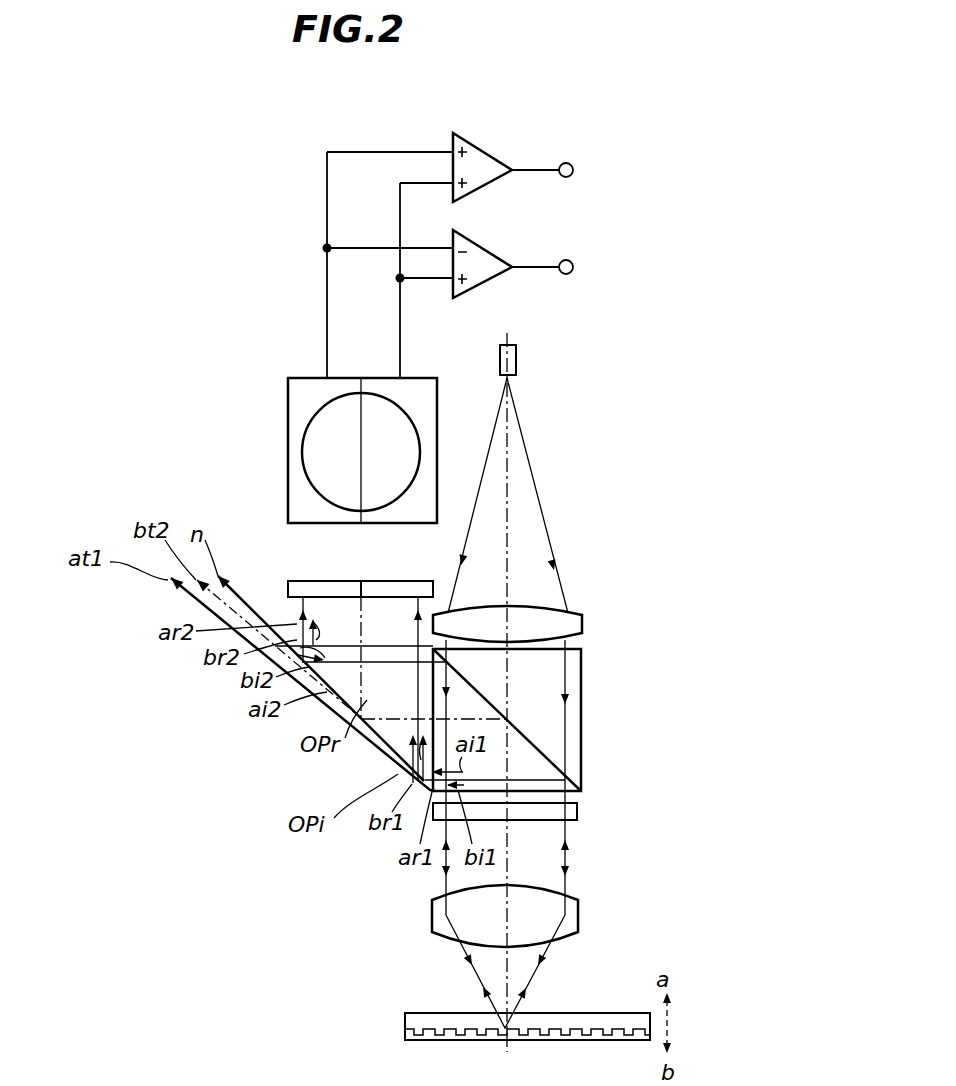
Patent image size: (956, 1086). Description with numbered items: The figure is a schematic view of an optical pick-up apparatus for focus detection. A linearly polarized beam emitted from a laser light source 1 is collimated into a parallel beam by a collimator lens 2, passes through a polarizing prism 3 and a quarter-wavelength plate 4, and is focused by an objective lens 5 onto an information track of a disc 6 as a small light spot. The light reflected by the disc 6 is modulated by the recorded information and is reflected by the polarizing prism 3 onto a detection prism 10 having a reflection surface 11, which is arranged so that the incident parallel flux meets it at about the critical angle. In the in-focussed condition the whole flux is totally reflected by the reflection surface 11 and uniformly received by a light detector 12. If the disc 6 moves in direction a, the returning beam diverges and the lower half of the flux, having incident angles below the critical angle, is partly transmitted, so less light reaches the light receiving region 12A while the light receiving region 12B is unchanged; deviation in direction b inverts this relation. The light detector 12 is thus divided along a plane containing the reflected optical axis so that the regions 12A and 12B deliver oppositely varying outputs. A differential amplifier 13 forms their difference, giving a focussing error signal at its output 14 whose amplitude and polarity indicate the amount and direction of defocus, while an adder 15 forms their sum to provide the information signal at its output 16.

The laser light source 1 is at (518, 362).
The collimator lens 2 is at (575, 612).
The polarizing prism 3 is at (538, 685).
The quarter-wavelength plate 4 is at (577, 812).
The objective lens 5 is at (557, 908).
The disc 6 is at (605, 1020).
The detection prism 10 is at (378, 748).
The reflection surface 11 is at (358, 690).
The light detector 12 is at (332, 560).
The light receiving region 12A is at (387, 418).
The light receiving region 12B is at (317, 450).
The differential amplifier 13 is at (485, 247).
The output 14 is at (566, 260).
The adder 15 is at (484, 150).
The output 16 is at (566, 163).